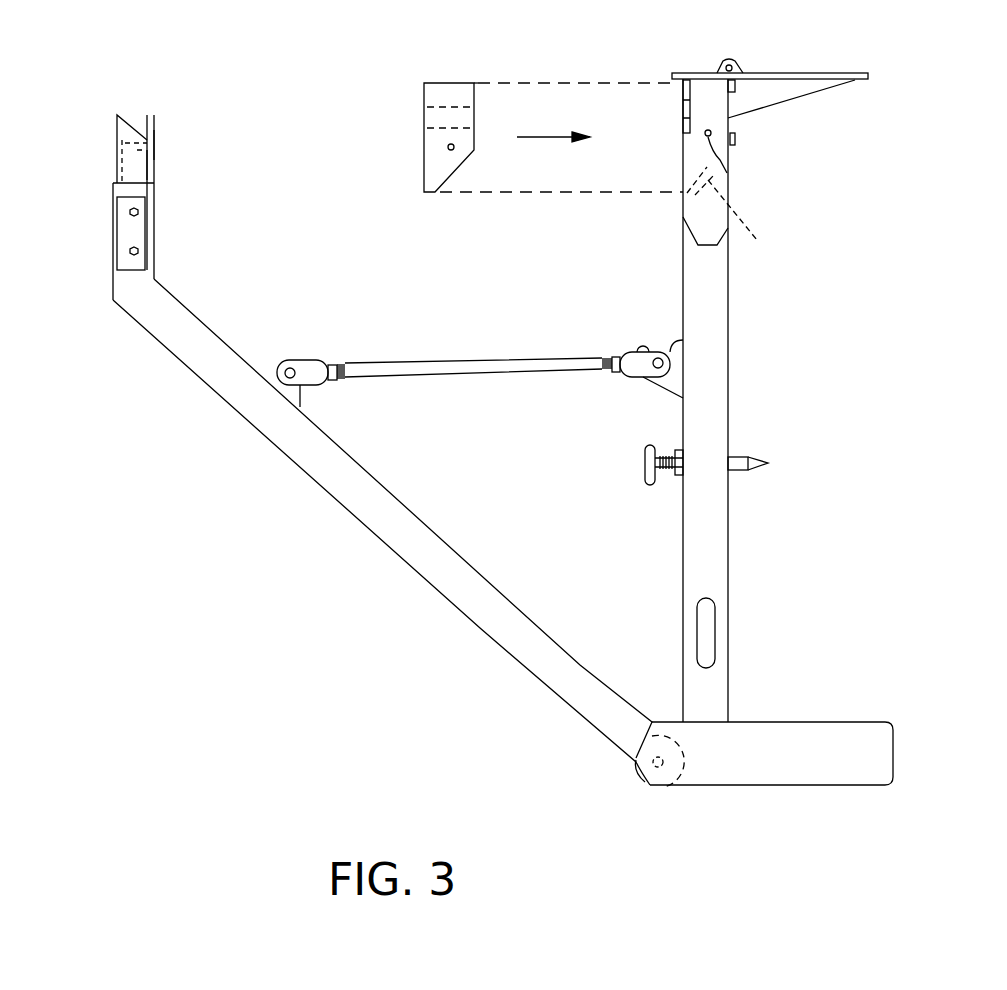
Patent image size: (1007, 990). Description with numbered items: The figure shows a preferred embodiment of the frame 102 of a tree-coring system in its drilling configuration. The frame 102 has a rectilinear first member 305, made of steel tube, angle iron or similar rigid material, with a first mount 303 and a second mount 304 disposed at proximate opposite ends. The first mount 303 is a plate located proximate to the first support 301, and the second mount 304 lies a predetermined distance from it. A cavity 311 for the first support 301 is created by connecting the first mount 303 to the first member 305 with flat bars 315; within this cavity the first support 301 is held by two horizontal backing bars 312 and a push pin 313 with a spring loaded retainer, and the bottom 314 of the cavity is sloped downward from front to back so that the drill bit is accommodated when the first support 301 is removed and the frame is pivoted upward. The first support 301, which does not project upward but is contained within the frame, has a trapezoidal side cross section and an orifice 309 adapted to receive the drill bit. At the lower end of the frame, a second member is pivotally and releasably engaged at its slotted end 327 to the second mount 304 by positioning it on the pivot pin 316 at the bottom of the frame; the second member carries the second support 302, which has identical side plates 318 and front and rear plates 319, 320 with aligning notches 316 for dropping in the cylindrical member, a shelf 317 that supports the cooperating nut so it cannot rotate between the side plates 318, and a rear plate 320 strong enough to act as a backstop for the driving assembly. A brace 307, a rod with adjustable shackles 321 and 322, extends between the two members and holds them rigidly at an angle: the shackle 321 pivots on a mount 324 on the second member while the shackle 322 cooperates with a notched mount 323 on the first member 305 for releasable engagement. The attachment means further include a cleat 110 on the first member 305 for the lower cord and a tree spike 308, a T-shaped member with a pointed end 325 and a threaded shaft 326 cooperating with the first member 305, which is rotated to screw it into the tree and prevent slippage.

The frame 102 is at (262, 500).
The cleat 110 is at (697, 637).
The first support 301 is at (430, 98).
The second support 302 is at (117, 128).
The first mount 303 is at (785, 72).
The second mount 304 is at (818, 770).
The first member 305 is at (723, 617).
The brace 307 is at (425, 367).
The tree spike 308 is at (393, 538).
The orifice 309 is at (472, 122).
The cavity 311 is at (690, 153).
The horizontal backing bars 312 is at (737, 85).
The push pin 313 is at (710, 137).
The bottom of cavity 314 is at (752, 236).
The flat bars 315 is at (700, 210).
The aligning notches / pivot pin 316 is at (137, 115).
The shelf 317 is at (162, 150).
The side plates 318 is at (137, 162).
The front plate 319 is at (147, 167).
The rear plate 320 is at (117, 155).
The shackle 321 is at (315, 377).
The shackle 322 is at (630, 350).
The notched mount 323 is at (672, 352).
The mount 324 is at (265, 368).
The pointed end 325 is at (770, 467).
The threaded shaft 326 is at (670, 475).
The slotted end 327 is at (620, 758).